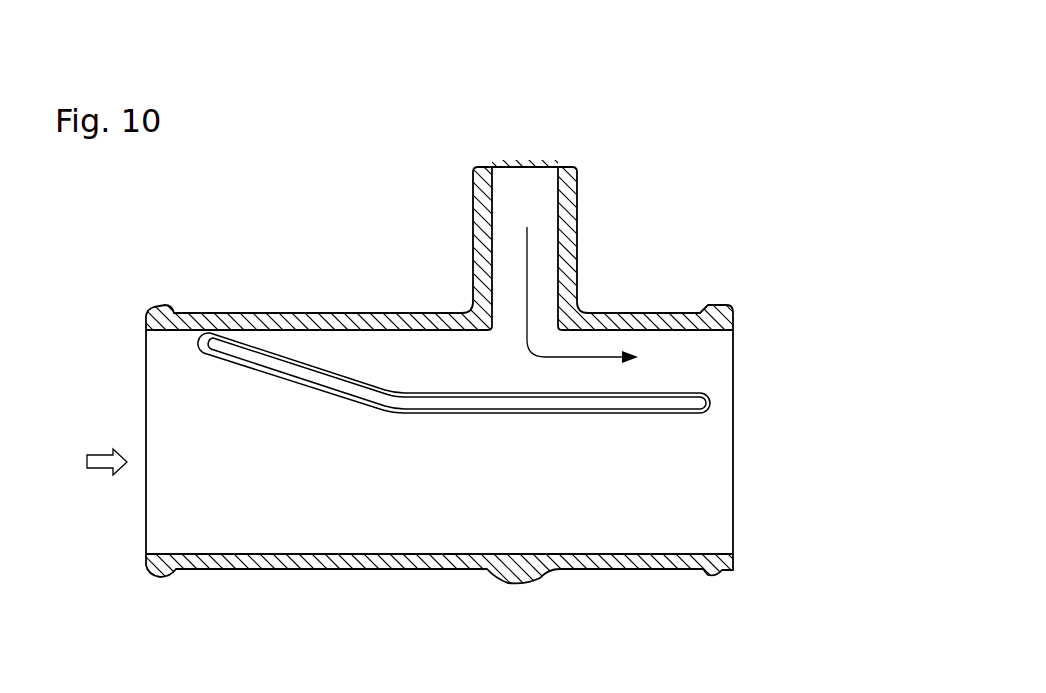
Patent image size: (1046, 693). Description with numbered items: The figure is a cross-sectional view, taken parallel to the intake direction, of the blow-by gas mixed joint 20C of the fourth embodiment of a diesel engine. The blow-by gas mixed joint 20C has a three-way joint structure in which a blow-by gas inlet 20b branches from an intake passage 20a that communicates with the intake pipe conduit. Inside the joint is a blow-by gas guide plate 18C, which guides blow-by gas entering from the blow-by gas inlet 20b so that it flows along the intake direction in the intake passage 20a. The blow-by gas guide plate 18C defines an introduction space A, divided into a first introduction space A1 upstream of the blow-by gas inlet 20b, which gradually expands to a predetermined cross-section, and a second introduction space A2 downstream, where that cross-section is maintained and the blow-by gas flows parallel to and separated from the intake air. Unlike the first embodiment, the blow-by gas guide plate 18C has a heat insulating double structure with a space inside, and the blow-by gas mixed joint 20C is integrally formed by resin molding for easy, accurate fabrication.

The blow-by gas mixed joint 20C is at (512, 317).
The intake passage 20a is at (617, 312).
The blow-by gas inlet 20b is at (577, 217).
The blow-by gas guide plate 18C is at (635, 405).
The first introduction space A1 is at (370, 350).
The introduction space A is at (443, 352).
The second introduction space A2 is at (677, 350).